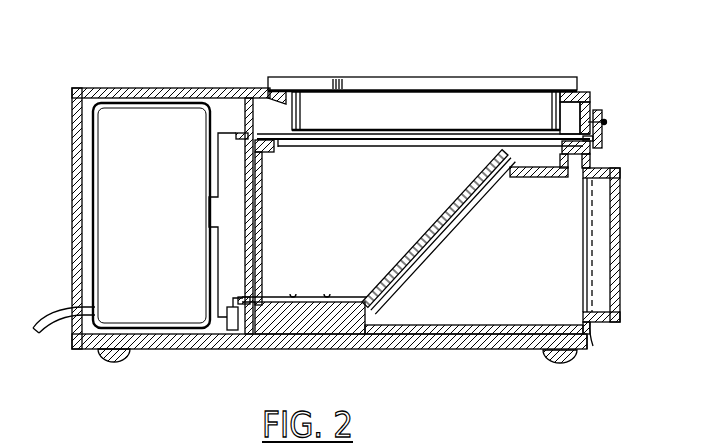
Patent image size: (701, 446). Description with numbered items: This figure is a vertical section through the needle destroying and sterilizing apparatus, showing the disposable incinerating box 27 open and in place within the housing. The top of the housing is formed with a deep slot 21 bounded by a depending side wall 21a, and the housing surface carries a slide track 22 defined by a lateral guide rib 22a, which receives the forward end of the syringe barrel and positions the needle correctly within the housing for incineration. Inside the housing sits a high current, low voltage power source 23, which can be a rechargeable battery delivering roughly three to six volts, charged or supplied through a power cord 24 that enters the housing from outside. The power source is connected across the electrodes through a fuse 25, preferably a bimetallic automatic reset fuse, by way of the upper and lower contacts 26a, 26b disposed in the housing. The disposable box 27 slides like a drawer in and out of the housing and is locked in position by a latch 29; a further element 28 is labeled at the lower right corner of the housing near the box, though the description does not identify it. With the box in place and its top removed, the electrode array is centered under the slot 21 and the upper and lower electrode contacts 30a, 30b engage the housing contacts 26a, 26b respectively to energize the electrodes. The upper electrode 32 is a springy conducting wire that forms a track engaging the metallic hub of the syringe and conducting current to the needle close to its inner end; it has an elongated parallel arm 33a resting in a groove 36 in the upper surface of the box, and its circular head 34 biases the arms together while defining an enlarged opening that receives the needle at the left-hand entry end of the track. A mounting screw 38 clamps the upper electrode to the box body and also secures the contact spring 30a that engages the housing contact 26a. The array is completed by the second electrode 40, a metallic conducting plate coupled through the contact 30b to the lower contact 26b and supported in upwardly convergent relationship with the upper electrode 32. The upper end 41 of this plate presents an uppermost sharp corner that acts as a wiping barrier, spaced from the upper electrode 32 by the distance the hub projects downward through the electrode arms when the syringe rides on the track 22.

The deep slot 21 is at (356, 113).
The depending side wall 21a is at (385, 102).
The slide track 22 is at (473, 90).
The lateral guide rib 22a is at (540, 89).
The power source 23 is at (176, 115).
The power cord 24 is at (58, 318).
The fuse 25 is at (227, 332).
The upper contact 26a is at (240, 133).
The lower contact 26b is at (242, 306).
The disposable box 27 is at (593, 328).
The housing bottom corner 28 is at (586, 353).
The latch 29 is at (604, 142).
The upper electrode contact 30a is at (262, 106).
The lower electrode contact 30b is at (412, 243).
The upper electrode 32 is at (447, 137).
The elongated parallel arm 33a is at (382, 143).
The circular head 34 is at (277, 143).
The groove 36 is at (353, 141).
The mounting screw 38 is at (263, 139).
The second electrode 40 is at (465, 232).
The upper end of lower electrode 41 is at (422, 237).